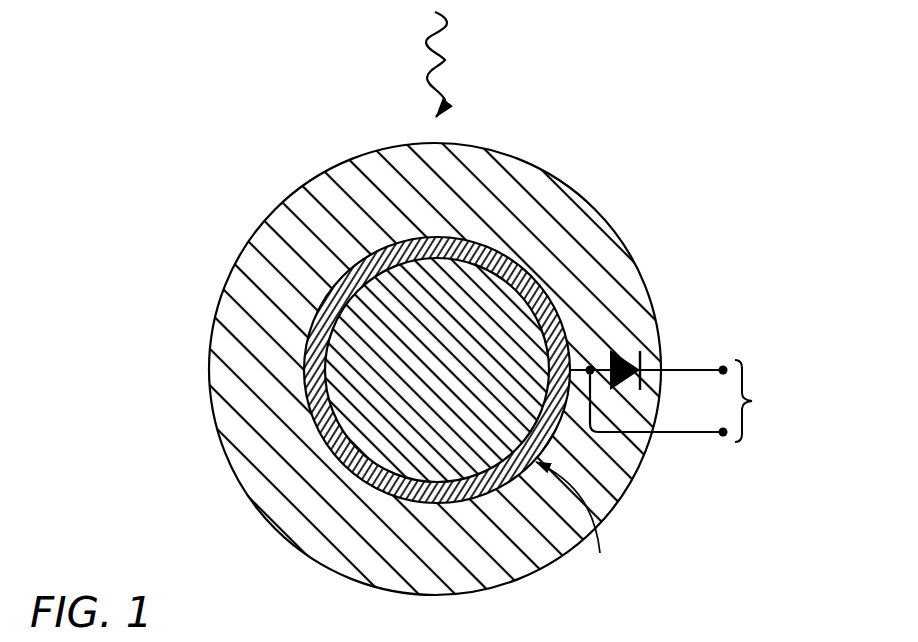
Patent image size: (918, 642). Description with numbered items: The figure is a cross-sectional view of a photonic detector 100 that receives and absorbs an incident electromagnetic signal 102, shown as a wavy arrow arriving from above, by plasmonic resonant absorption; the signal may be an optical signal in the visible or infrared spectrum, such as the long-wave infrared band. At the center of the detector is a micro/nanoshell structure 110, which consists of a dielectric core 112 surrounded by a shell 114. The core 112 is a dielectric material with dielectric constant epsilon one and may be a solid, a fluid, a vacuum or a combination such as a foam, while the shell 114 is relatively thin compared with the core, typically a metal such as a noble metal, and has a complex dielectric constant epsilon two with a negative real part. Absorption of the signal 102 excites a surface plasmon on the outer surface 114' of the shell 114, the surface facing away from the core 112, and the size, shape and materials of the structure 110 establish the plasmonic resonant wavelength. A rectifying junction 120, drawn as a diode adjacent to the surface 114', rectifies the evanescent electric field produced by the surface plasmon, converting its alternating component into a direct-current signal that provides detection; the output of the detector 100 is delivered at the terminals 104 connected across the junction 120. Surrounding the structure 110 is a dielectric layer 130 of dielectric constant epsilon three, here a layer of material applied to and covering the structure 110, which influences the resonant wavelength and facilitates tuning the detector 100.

The photonic detector 100 is at (464, 304).
The electromagnetic signal 102 is at (445, 60).
The terminals 104 is at (766, 401).
The micro/nanoshell (MNS) structure 110 is at (406, 328).
The dielectric core 112 is at (358, 292).
The shell 114 is at (426, 363).
The surface 114' is at (511, 317).
The rectifying junction 120 is at (620, 320).
The dielectric layer 130 is at (232, 292).